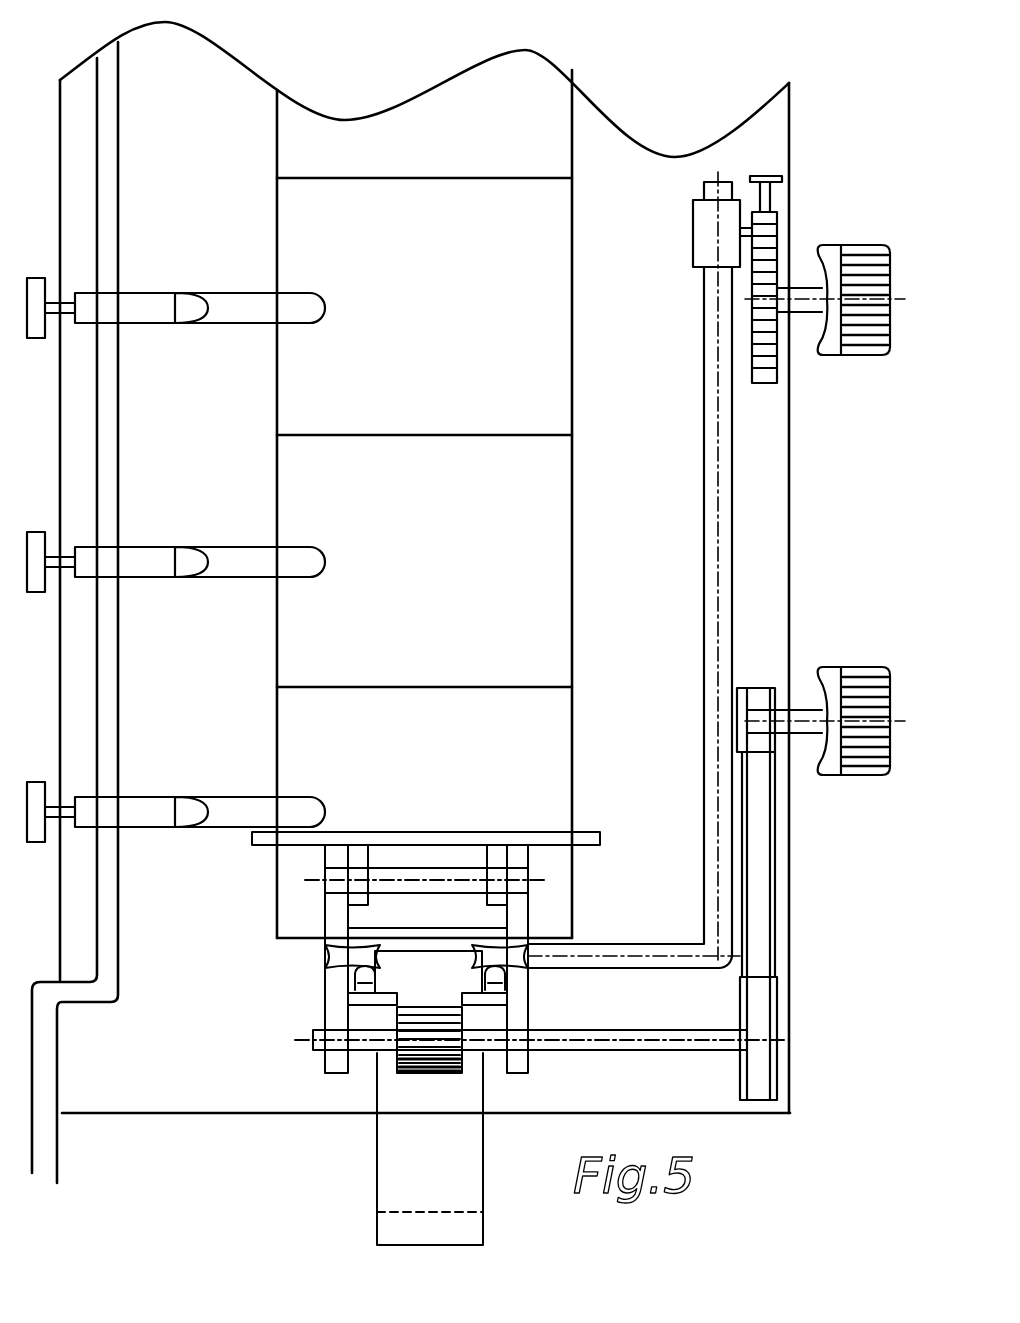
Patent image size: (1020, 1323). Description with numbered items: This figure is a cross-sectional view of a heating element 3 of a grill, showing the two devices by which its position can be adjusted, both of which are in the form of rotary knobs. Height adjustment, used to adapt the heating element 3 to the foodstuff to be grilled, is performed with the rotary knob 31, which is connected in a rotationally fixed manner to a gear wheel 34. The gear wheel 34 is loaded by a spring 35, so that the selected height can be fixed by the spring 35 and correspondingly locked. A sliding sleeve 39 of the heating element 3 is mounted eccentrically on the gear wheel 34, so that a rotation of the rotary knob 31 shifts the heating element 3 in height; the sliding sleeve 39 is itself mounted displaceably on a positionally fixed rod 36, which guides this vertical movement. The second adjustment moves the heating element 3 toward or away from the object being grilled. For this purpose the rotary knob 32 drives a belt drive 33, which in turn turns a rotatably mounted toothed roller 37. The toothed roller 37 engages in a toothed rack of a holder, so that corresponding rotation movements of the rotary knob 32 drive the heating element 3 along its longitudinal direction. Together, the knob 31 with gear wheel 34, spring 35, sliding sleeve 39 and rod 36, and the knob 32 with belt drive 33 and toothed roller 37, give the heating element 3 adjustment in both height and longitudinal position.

The heating element 3 is at (405, 110).
The height adjustment device 31 is at (851, 244).
The device for adjusting the longitudinal position 32 is at (846, 665).
The belt drive 33 is at (760, 855).
The gear wheel 34 is at (775, 368).
The spring 35 is at (789, 180).
The positionally fixed rod 36 is at (732, 523).
The toothed roller 37 is at (397, 1062).
The sliding sleeve 39 is at (693, 231).